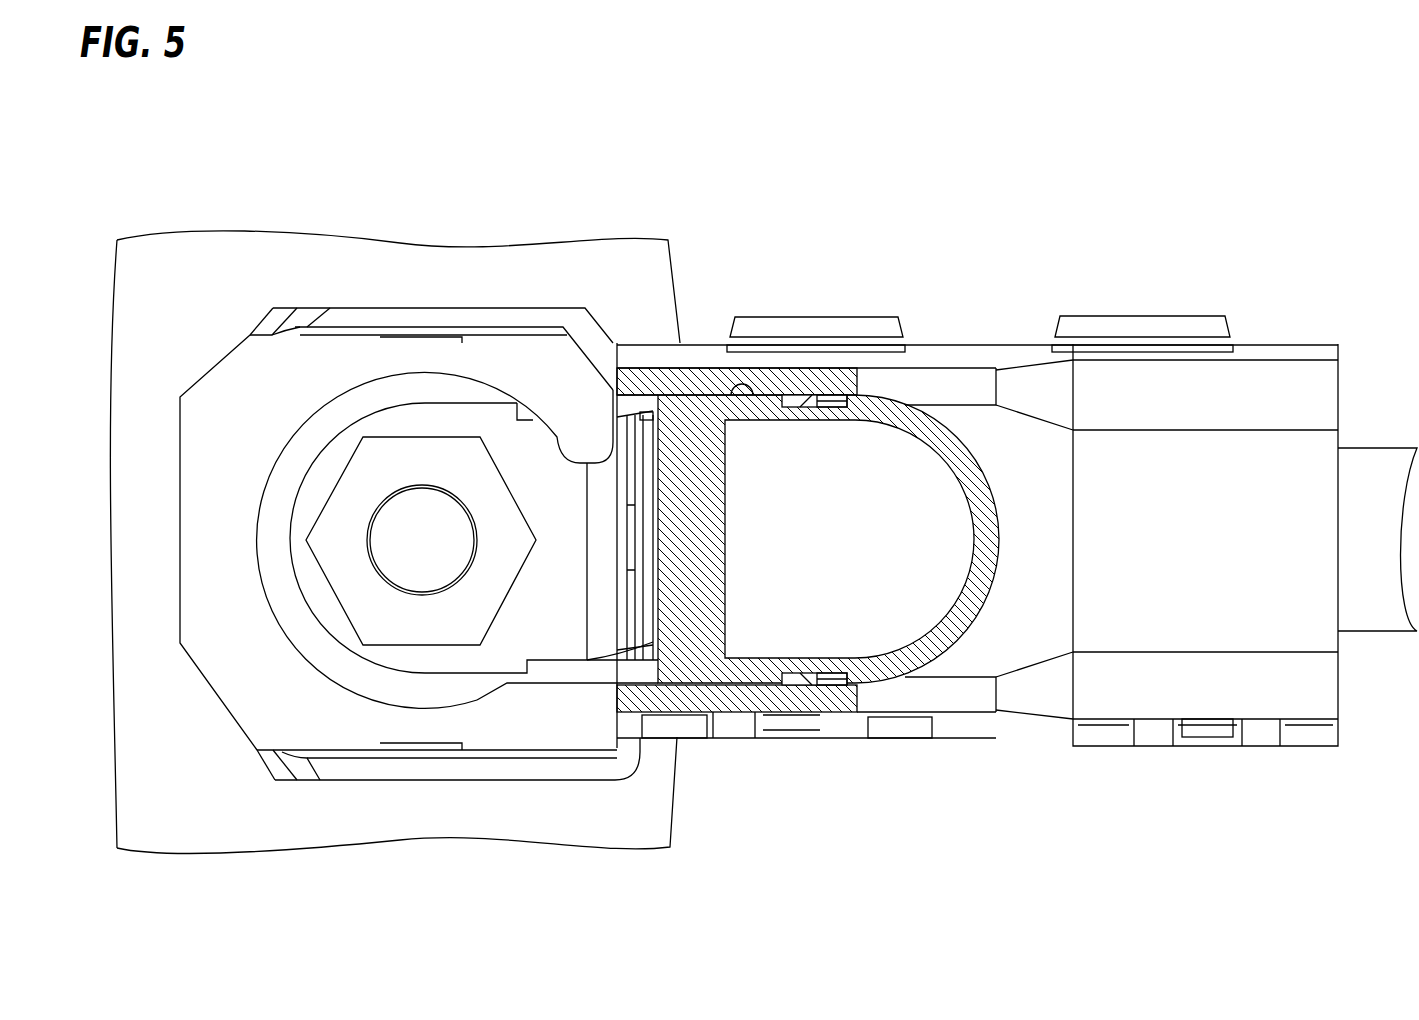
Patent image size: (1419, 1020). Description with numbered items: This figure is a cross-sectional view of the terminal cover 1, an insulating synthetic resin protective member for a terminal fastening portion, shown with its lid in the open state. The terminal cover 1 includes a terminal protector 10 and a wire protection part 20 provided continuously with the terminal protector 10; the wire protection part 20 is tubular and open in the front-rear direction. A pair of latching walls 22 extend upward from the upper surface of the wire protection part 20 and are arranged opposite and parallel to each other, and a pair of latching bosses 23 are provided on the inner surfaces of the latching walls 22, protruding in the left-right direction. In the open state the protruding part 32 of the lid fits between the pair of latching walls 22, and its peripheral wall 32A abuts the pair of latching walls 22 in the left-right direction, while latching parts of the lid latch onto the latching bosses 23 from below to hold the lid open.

The terminal cover 1 is at (836, 190).
The terminal protector 10 is at (340, 762).
The wire protection part 20 is at (1138, 573).
The latching walls 22 is at (675, 697).
The latching bosses 23 is at (800, 680).
The protruding part 32 is at (898, 597).
The peripheral wall 32A is at (750, 396).